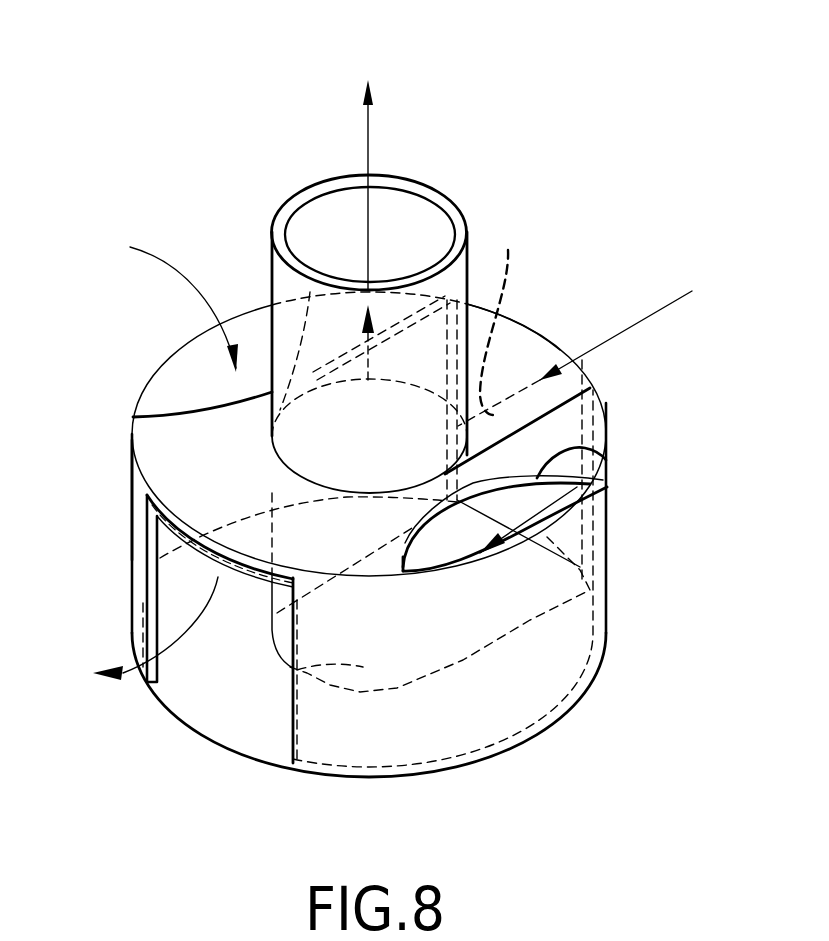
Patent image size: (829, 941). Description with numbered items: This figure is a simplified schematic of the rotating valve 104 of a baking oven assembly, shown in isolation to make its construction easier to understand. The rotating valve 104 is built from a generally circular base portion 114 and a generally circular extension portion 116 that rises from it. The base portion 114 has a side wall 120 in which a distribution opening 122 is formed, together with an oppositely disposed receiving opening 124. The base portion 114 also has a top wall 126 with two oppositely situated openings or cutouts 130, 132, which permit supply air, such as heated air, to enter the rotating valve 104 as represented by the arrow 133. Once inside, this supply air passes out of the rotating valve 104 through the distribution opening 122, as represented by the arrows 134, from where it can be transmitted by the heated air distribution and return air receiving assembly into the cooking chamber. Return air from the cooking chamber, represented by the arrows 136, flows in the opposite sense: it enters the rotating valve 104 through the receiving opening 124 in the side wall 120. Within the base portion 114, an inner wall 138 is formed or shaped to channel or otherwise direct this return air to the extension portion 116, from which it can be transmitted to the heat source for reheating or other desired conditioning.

The rotating valve 104 is at (573, 150).
The base portion 114 is at (497, 744).
The extension portion 116 is at (270, 268).
The side wall 120 is at (570, 673).
The distribution opening 122 is at (283, 737).
The receiving opening 124 is at (515, 322).
The top wall 126 is at (167, 456).
The opening or cutout 130 is at (174, 380).
The opening or cutout 132 is at (606, 460).
The arrow 133 is at (153, 250).
The arrows 134 is at (210, 740).
The arrows 136 is at (374, 128).
The inner wall 138 is at (593, 410).